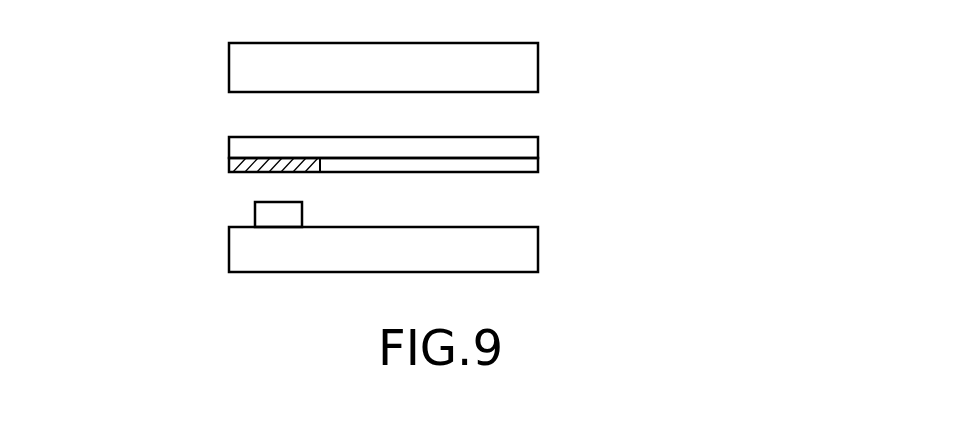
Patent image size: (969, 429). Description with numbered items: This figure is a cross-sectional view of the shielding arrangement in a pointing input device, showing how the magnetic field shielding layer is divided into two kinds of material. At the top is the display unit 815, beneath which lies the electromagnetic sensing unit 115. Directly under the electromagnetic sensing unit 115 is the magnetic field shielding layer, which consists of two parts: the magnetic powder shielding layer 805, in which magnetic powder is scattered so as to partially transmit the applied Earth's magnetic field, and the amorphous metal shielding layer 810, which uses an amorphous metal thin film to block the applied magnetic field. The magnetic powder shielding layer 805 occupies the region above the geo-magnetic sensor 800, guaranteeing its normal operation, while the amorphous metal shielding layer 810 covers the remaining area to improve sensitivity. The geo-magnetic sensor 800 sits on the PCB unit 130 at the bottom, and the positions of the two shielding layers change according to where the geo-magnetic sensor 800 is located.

The display unit 815 is at (527, 72).
The electromagnetic sensing unit 115 is at (530, 142).
The amorphous metal shielding layer 810 is at (530, 167).
The magnetic powder shielding layer 805 is at (236, 168).
The geo-magnetic sensor 800 is at (293, 216).
The PCB unit 130 is at (527, 256).